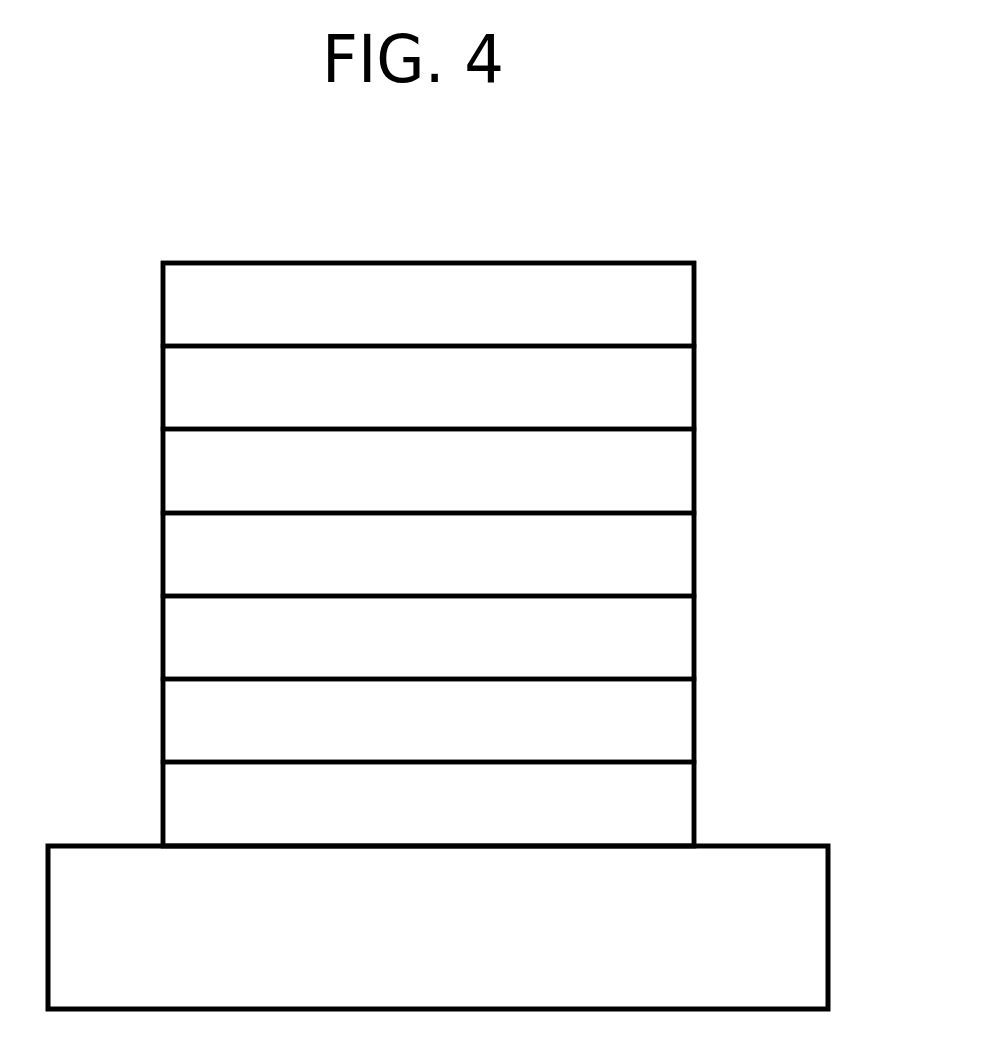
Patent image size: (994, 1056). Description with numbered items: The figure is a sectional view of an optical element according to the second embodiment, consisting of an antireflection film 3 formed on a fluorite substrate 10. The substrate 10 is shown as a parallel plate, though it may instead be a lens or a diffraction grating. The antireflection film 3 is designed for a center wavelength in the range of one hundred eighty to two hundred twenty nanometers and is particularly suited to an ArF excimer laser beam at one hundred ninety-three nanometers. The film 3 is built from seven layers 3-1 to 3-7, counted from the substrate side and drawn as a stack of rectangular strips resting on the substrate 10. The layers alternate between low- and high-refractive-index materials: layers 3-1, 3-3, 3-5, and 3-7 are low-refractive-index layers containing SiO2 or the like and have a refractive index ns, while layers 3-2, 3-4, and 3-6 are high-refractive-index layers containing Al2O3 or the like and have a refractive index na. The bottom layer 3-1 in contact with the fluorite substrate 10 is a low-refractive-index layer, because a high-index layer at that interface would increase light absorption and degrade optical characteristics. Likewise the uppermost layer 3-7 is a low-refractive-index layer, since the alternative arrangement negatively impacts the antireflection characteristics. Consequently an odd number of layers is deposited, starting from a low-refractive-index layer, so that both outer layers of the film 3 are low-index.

The antireflection film 3 is at (748, 516).
The first layer 3-1 is at (190, 798).
The second layer 3-2 is at (190, 717).
The third layer 3-3 is at (190, 634).
The fourth layer 3-4 is at (190, 552).
The fifth layer 3-5 is at (190, 466).
The sixth layer 3-6 is at (190, 383).
The seventh layer 3-7 is at (190, 300).
The fluorite substrate 10 is at (797, 919).